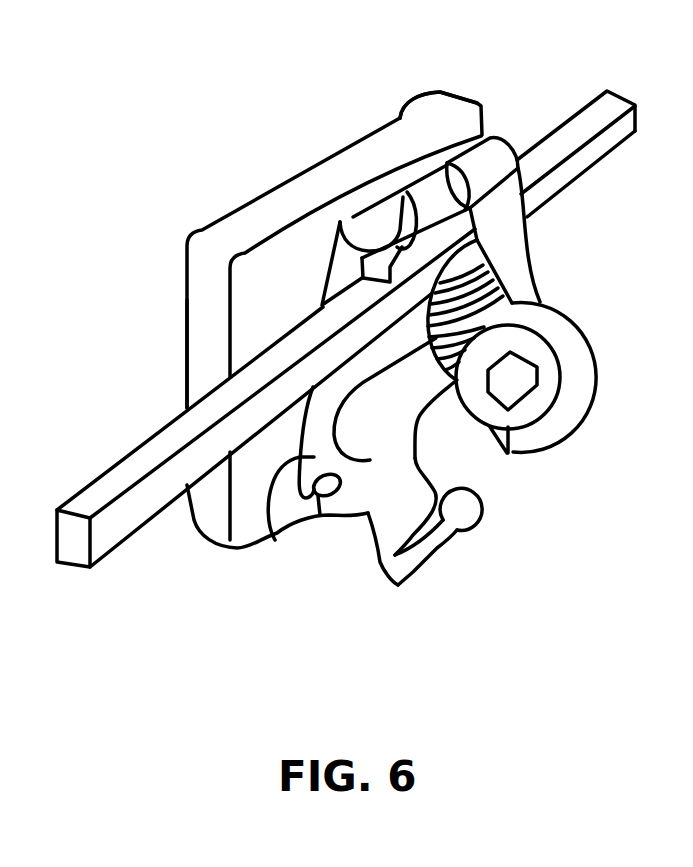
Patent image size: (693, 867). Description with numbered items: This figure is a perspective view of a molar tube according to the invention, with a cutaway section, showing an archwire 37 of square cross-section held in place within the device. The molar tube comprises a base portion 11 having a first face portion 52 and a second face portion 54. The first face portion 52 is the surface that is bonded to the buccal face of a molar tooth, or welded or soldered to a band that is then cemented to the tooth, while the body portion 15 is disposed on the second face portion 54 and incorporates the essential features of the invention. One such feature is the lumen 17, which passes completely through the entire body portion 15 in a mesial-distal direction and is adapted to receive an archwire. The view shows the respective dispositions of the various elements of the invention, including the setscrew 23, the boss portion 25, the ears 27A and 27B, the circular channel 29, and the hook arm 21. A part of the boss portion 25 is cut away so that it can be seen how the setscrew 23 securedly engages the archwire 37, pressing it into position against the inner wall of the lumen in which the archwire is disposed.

The base portion 11 is at (202, 280).
The body portion 15 is at (280, 548).
The lumen 17 is at (358, 437).
The hook arm 21 is at (437, 547).
The setscrew 23 is at (556, 375).
The boss portion 25 is at (545, 295).
The ear 27A is at (430, 202).
The ear 27B is at (498, 157).
The circular channel 29 is at (377, 225).
The archwire 37 is at (93, 497).
The first face portion 52 is at (186, 362).
The second face portion 54 is at (268, 280).